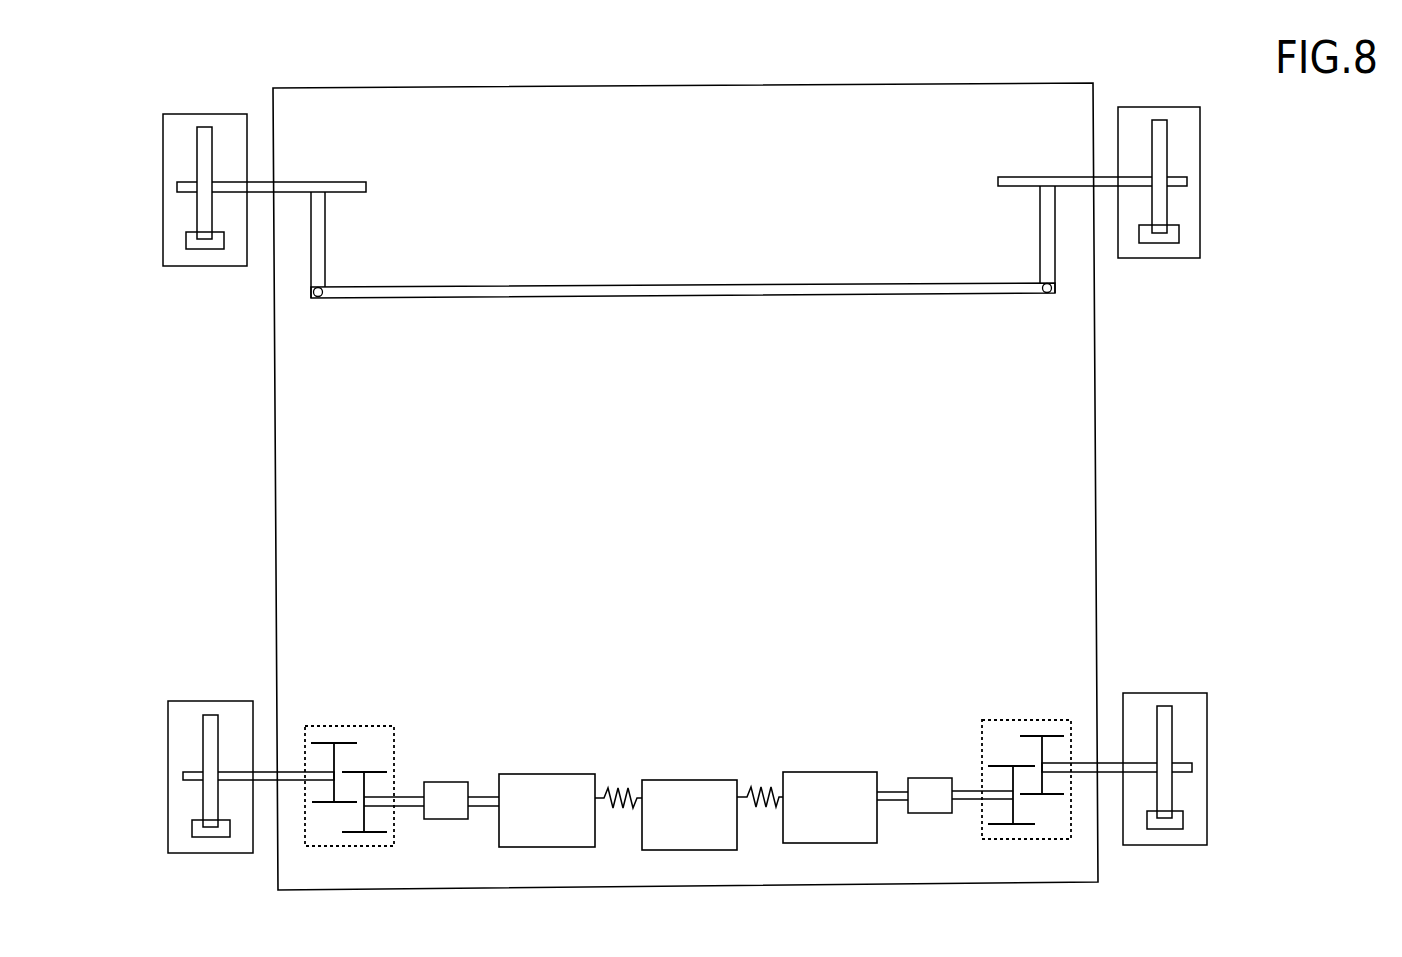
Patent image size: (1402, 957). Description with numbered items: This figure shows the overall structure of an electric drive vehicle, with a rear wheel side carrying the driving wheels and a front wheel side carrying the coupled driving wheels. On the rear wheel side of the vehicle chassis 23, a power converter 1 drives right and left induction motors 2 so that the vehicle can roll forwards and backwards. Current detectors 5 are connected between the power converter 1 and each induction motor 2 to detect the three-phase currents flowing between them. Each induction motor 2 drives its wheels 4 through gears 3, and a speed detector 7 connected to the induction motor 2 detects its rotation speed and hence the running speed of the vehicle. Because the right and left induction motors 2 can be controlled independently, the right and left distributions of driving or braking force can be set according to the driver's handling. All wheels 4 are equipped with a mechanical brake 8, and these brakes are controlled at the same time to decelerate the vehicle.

The power converter 1 is at (688, 780).
The induction motor 2 is at (547, 774).
The gears 3 is at (376, 739).
The wheels 4 is at (178, 126).
The current detectors 5 is at (620, 787).
The speed detector 7 is at (447, 782).
The mechanical brakes 8 is at (204, 243).
The vehicle chassis 23 is at (678, 98).